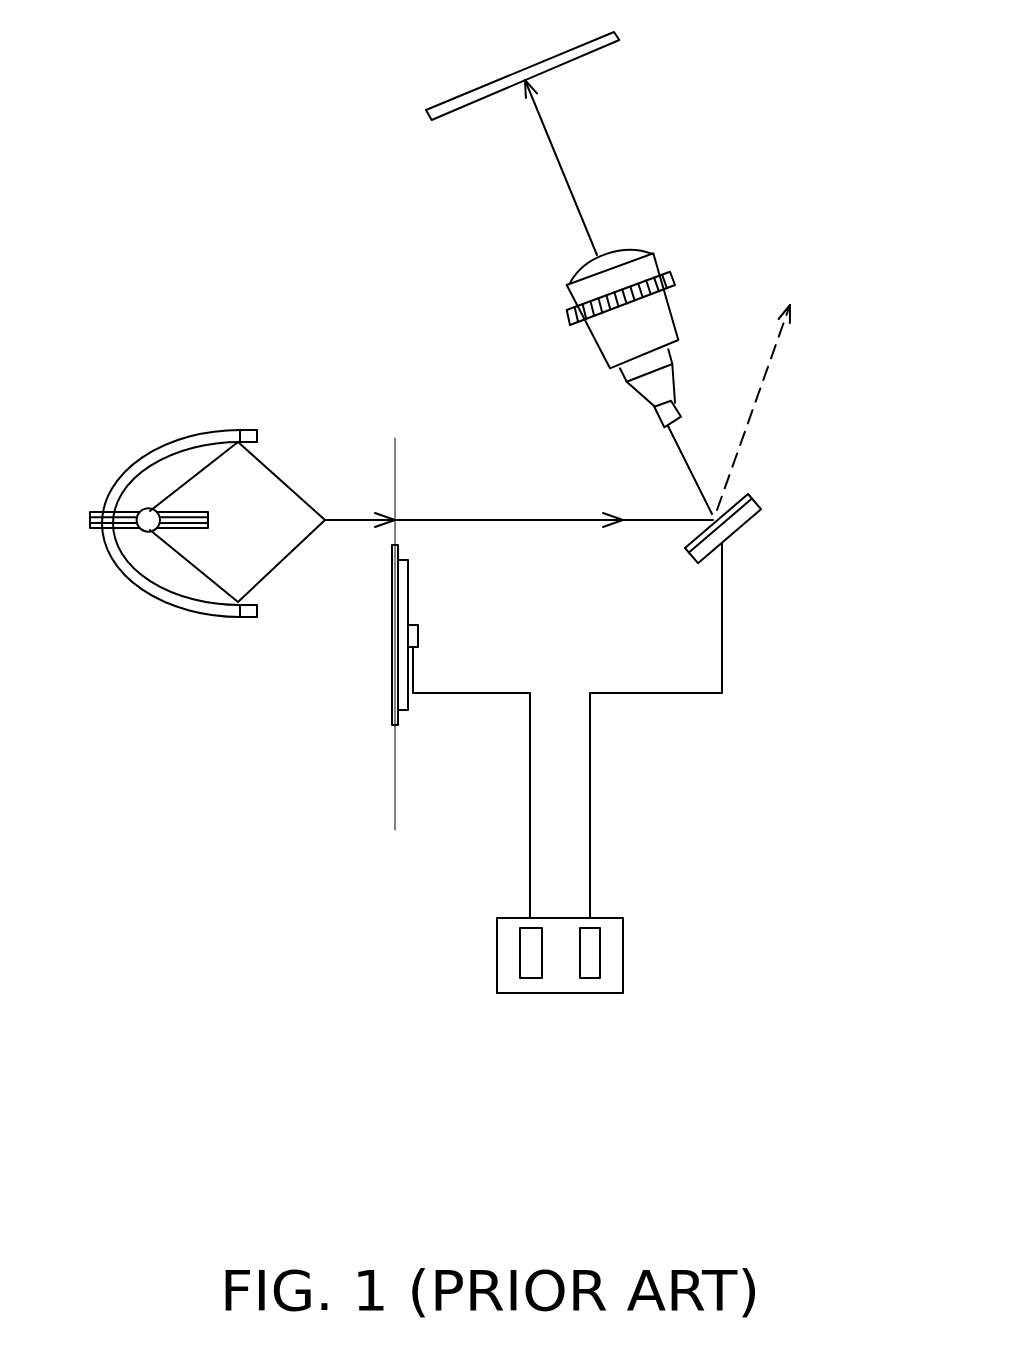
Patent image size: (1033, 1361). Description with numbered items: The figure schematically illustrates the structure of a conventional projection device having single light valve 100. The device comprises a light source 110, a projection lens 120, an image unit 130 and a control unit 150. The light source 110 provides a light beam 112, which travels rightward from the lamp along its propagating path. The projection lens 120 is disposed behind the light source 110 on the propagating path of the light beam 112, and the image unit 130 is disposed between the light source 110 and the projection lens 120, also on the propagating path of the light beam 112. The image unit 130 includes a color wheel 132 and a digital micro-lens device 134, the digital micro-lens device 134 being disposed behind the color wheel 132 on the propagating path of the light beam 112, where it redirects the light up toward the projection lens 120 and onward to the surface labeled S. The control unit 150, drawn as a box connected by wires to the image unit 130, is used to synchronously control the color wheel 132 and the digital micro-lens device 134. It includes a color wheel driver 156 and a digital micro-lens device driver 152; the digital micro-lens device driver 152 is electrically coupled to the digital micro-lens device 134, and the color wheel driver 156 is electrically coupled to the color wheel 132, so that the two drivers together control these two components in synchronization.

The projection device having single light valve 100 is at (493, 1148).
The light source 110 is at (168, 573).
The light beam 112 is at (338, 522).
The projection lens 120 is at (656, 313).
The image unit 130 is at (576, 595).
The color wheel 132 is at (406, 558).
The digital micro-lens device 134 is at (702, 518).
The control unit 150 is at (614, 1001).
The digital micro-lens device driver 152 is at (590, 967).
The color wheel driver 156 is at (532, 967).
The screen / sample S is at (617, 32).